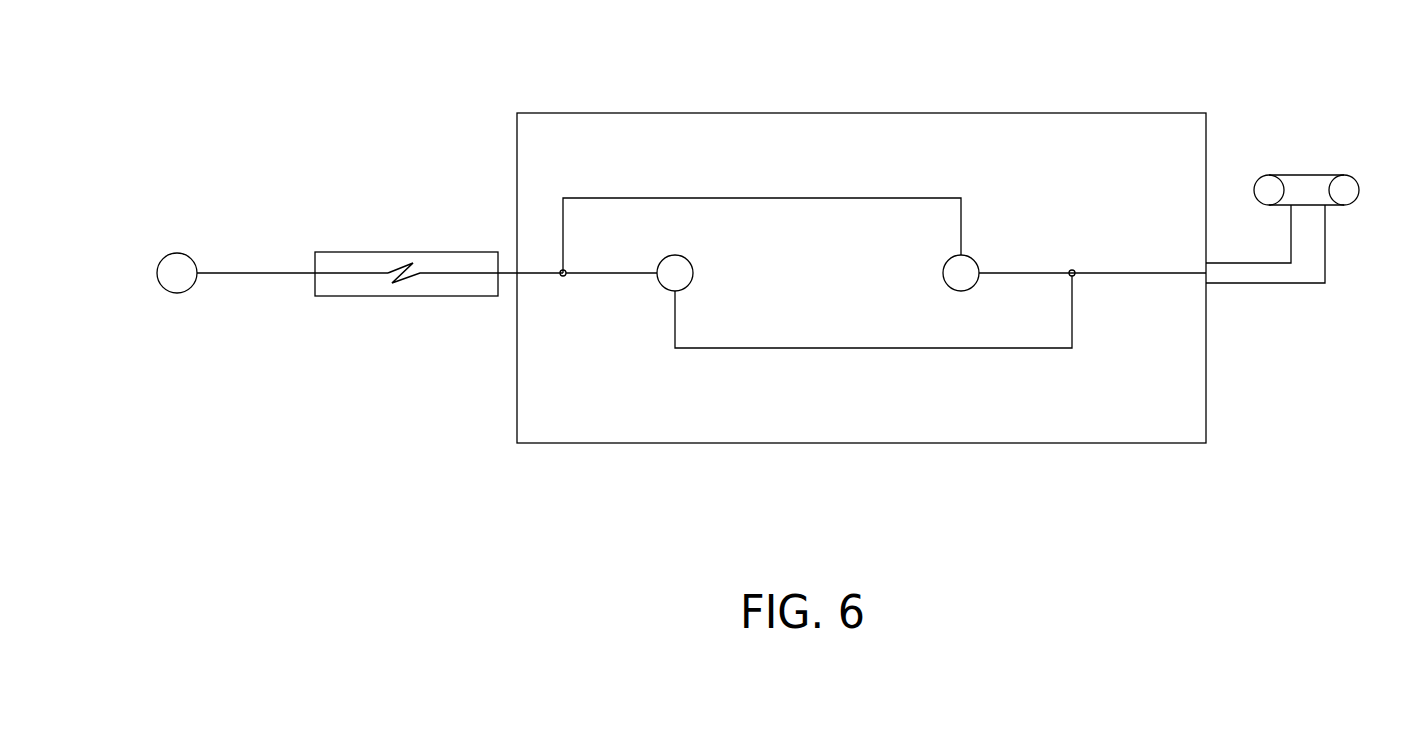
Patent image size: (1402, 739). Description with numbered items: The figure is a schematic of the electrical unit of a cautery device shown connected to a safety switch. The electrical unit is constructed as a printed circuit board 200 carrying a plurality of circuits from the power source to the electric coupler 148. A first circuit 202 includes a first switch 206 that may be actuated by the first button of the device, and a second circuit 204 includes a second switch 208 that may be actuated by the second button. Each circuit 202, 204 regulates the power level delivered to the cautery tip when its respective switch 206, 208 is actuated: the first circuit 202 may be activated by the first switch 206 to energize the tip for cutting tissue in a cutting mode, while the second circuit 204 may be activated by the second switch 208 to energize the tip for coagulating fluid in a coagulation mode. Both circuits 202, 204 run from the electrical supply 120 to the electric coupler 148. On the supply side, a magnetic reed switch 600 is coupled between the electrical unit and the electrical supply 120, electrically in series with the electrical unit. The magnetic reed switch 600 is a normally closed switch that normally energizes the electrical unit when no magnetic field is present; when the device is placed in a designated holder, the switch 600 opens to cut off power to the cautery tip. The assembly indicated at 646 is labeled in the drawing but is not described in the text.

The electrical supply 120 is at (180, 254).
The magnetic reed switch 600 is at (425, 296).
The printed circuit board 200 is at (578, 113).
The second circuit 204 is at (735, 198).
The first switch 206 is at (663, 290).
The second switch 208 is at (975, 260).
The first circuit 202 is at (812, 348).
The electric coupler 148 is at (1315, 174).
The circuit 646 is at (1058, 463).